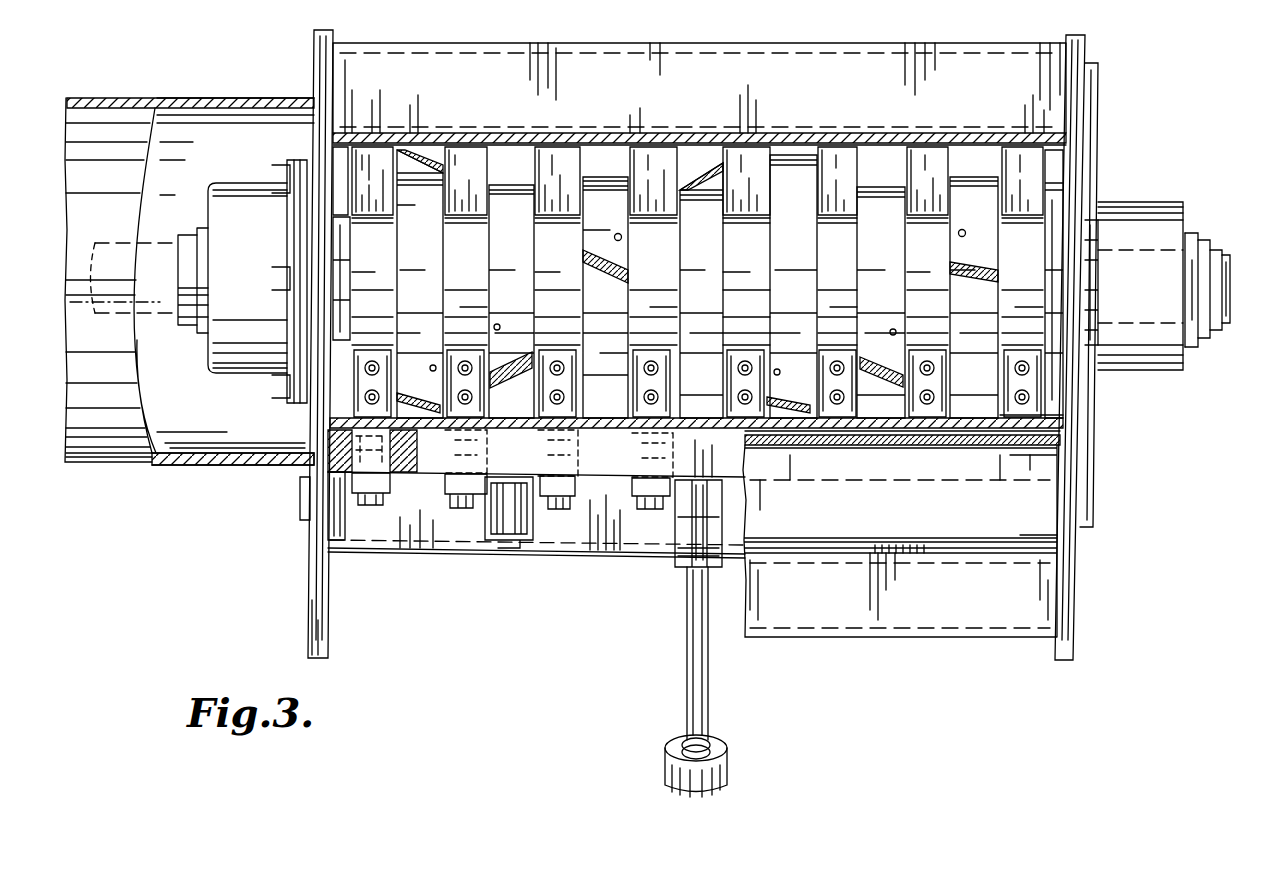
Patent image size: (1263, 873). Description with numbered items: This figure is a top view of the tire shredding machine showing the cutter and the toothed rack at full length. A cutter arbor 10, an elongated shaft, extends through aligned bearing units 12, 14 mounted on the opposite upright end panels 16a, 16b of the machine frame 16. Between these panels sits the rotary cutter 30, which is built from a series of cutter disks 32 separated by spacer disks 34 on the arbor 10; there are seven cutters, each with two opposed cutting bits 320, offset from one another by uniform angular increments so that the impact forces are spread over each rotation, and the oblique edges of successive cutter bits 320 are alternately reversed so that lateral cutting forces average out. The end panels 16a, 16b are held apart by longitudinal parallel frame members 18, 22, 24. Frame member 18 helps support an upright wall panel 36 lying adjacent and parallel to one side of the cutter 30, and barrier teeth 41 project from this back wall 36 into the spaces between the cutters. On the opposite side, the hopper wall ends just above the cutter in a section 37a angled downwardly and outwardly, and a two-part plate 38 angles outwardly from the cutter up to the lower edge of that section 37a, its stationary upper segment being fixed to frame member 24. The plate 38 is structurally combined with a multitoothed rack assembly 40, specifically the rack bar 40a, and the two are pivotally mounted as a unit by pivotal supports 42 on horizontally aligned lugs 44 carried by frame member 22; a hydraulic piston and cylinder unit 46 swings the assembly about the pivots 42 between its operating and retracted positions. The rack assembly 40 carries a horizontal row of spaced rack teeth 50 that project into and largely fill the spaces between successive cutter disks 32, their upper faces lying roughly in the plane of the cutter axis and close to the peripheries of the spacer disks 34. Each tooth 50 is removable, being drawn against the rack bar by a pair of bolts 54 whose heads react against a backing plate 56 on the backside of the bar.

The cutter arbor 10 is at (157, 320).
The bearing unit 12 is at (1136, 202).
The bearing unit 14 is at (236, 183).
The machine frame 16 is at (292, 93).
The upright end panel 16a is at (1090, 57).
The upright end panel 16b is at (313, 55).
The longitudinal frame member 18 is at (768, 68).
The longitudinal frame member 22 is at (392, 540).
The longitudinal frame member 24 is at (980, 617).
The rotary cutter 30 is at (614, 172).
The cutter disk 32 is at (502, 260).
The spacer disk 34 is at (834, 229).
The upright wall panel 36 is at (587, 135).
The angled wall section 37a is at (1023, 517).
The two-part plate assembly 38 is at (1006, 414).
The rack assembly 40 is at (1027, 153).
The rack bar 40a is at (720, 435).
The barrier teeth 41 is at (550, 177).
The pivotal supports 42 is at (719, 500).
The lugs 44 is at (300, 490).
The hydraulic actuator piston and cylinder unit 46 is at (727, 763).
The rack teeth 50 is at (560, 353).
The bolts 54 is at (368, 503).
The backing plate 56 is at (355, 483).
The cutter bits 320 is at (888, 353).